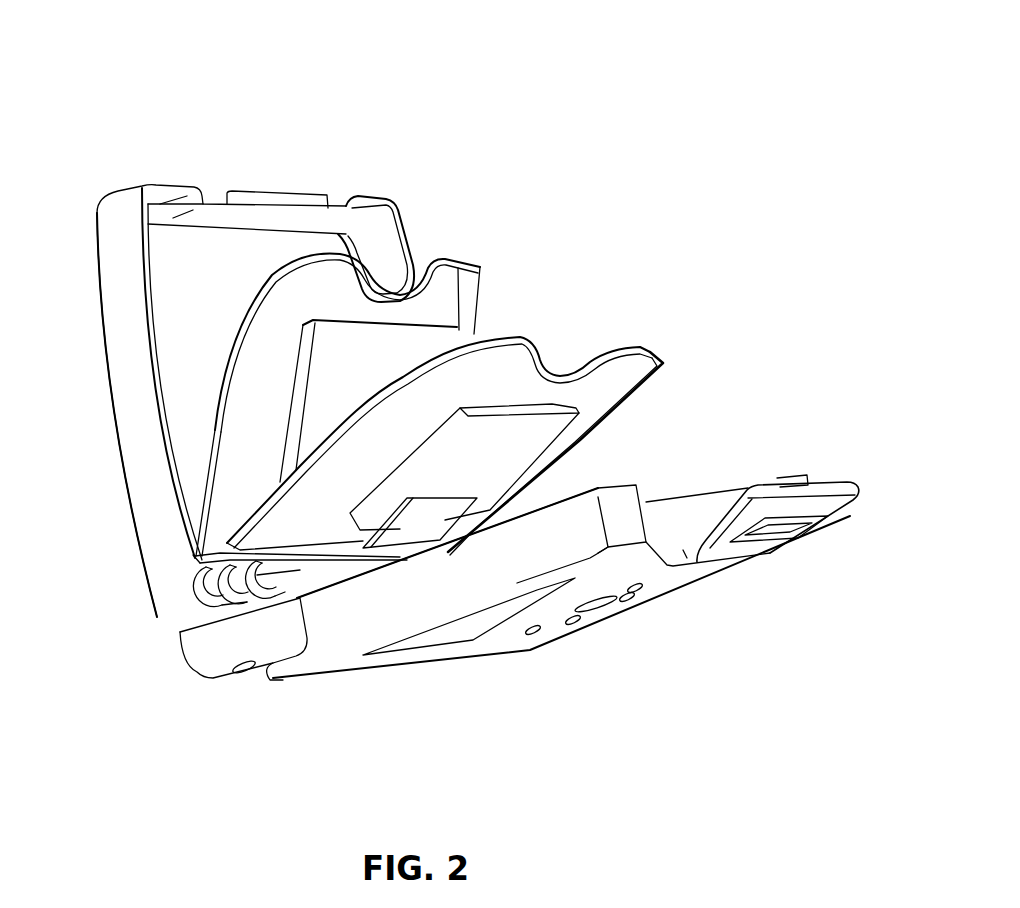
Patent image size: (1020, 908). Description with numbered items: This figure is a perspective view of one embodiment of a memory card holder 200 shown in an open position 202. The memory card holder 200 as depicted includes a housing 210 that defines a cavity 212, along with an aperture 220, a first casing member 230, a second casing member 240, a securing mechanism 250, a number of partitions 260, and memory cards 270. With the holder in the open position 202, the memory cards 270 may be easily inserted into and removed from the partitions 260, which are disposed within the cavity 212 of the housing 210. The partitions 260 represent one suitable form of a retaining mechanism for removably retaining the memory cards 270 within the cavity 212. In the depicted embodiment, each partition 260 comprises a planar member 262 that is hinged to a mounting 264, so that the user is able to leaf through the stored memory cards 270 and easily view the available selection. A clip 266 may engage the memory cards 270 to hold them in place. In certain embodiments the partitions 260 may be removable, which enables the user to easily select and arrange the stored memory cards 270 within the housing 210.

The memory card holder 200 is at (132, 104).
The open position 202 is at (624, 194).
The housing 210 is at (688, 607).
The cavity 212 is at (692, 440).
The aperture 220 is at (242, 668).
The first casing member 230 is at (325, 667).
The second casing member 240 is at (128, 378).
The securing mechanism 250 is at (847, 503).
The partitions 260 is at (452, 275).
The planar member 262 is at (235, 353).
The mounting 264 is at (180, 610).
The clip 266 is at (451, 534).
The memory cards 270 is at (383, 368).